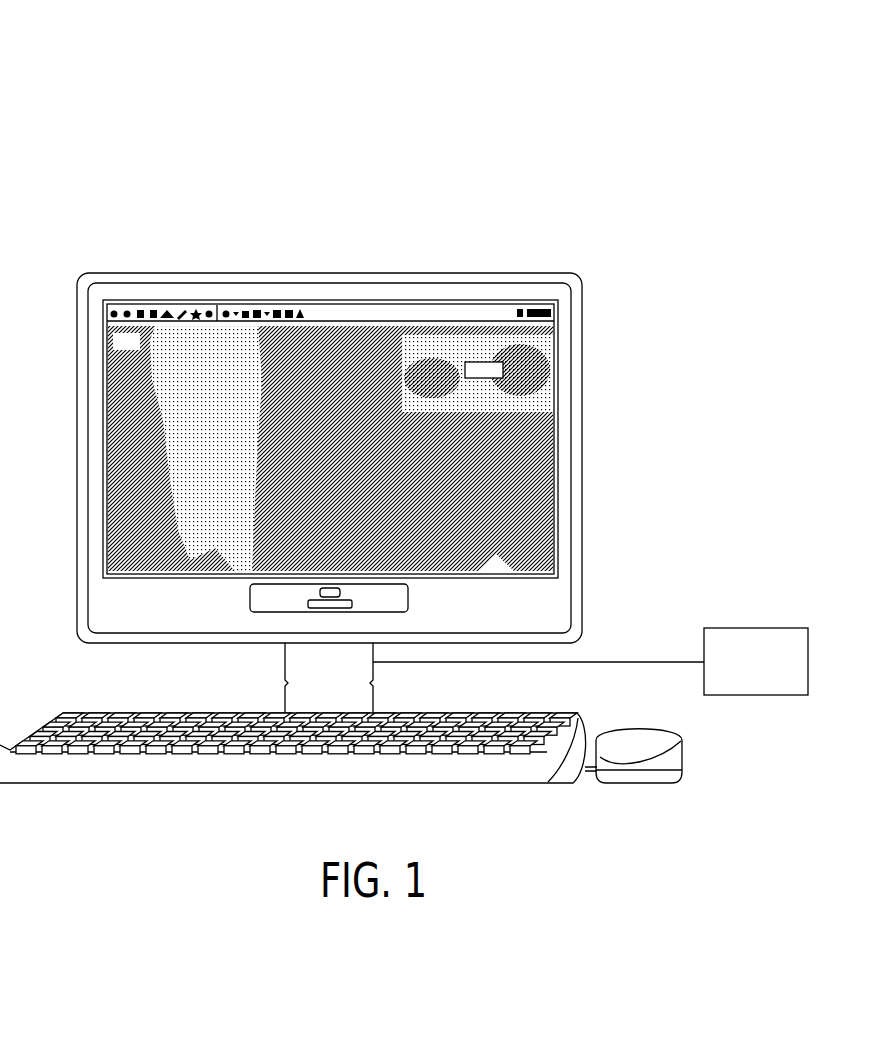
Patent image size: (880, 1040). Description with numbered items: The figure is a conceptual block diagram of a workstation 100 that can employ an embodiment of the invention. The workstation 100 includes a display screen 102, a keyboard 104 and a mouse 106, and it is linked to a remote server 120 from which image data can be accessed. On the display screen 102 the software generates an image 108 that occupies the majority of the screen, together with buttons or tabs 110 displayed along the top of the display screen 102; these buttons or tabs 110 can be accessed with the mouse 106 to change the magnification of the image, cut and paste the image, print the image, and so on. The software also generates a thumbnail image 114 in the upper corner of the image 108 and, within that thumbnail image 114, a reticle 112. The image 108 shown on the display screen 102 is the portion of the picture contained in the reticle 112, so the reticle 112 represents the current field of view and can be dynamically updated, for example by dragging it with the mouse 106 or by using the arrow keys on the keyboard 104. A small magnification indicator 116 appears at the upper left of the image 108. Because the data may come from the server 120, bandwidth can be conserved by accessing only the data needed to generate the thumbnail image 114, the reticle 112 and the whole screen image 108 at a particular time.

The workstation 100 is at (120, 95).
The display screen 102 is at (583, 554).
The keyboard 104 is at (583, 718).
The mouse 106 is at (681, 741).
The image 108 is at (548, 469).
The buttons or tabs 110 is at (348, 314).
The reticle 112 is at (498, 369).
The thumbnail image 114 is at (545, 381).
The magnification indicator 116 is at (113, 342).
The server 120 is at (756, 628).